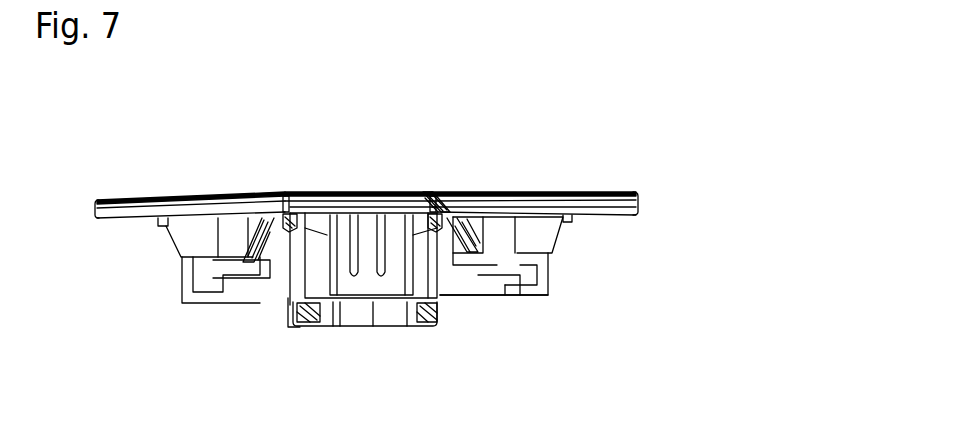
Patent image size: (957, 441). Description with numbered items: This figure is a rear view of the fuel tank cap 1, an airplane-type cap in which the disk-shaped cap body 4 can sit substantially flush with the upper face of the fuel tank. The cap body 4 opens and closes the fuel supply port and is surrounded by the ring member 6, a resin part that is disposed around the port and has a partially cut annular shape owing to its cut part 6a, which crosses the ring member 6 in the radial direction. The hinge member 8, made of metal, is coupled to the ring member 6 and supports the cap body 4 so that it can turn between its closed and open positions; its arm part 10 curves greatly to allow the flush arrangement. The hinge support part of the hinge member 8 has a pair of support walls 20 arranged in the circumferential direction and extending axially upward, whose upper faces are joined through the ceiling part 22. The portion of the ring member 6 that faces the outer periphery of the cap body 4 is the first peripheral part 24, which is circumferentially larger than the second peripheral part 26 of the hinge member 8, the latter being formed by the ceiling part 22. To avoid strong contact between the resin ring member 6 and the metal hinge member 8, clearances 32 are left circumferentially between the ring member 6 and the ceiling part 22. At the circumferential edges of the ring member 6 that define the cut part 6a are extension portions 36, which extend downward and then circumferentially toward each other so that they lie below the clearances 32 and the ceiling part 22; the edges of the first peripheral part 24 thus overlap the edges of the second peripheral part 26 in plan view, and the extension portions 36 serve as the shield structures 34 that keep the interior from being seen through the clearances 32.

The fuel tank cap 1 is at (592, 142).
The cap body 4 is at (514, 192).
The ring member 6 is at (395, 179).
The cut part 6a is at (434, 193).
The hinge member 8 is at (519, 303).
The arm part 10 is at (366, 270).
The support wall 20 is at (305, 323).
The ceiling part 22 is at (361, 151).
The first peripheral part 24 is at (106, 198).
The second peripheral part 26 is at (351, 190).
The clearance 32 is at (286, 192).
The shield structure 34 is at (292, 232).
The extension portion 36 is at (365, 310).